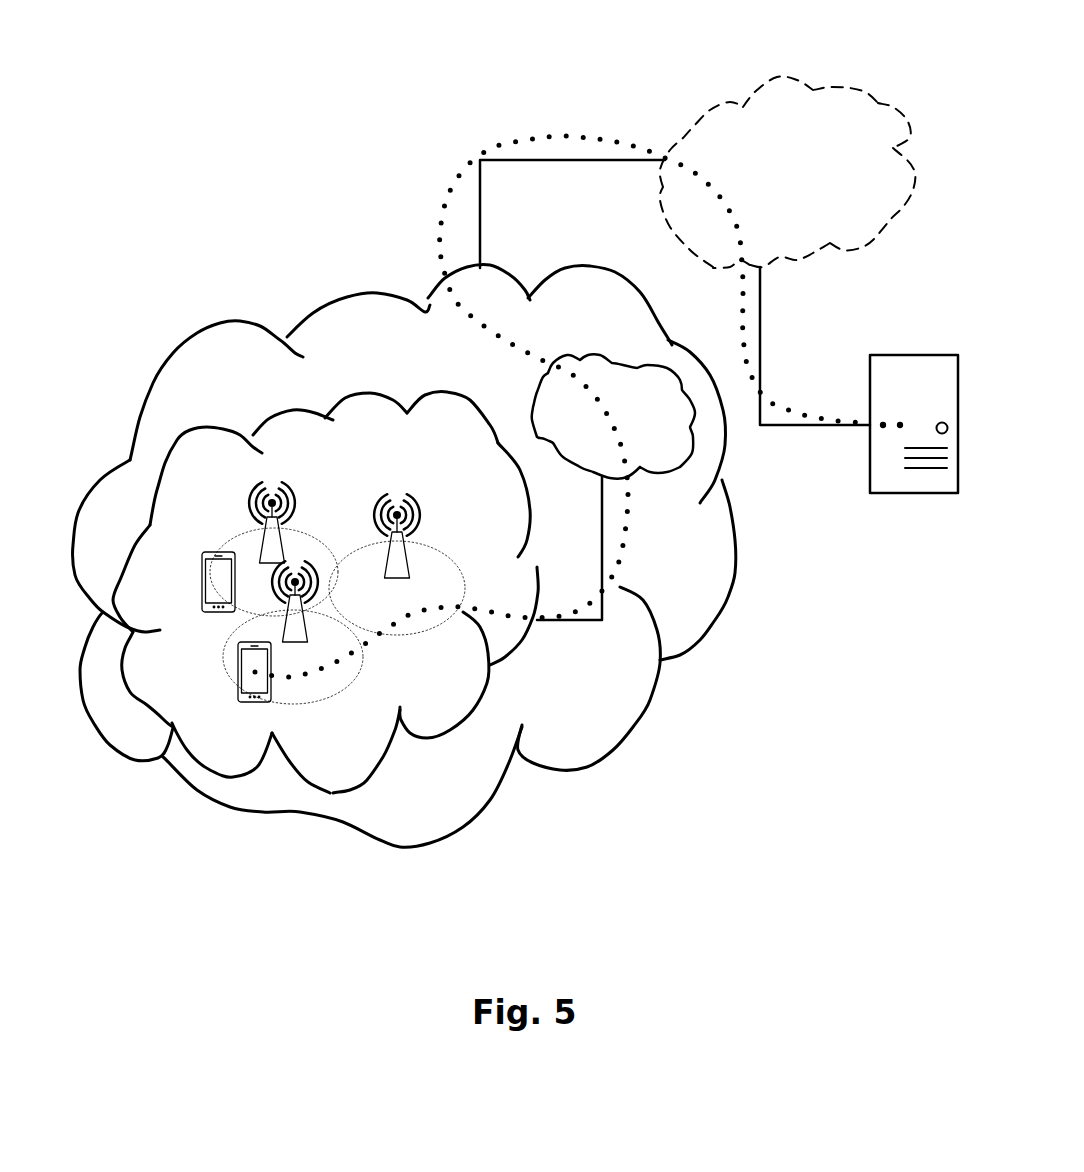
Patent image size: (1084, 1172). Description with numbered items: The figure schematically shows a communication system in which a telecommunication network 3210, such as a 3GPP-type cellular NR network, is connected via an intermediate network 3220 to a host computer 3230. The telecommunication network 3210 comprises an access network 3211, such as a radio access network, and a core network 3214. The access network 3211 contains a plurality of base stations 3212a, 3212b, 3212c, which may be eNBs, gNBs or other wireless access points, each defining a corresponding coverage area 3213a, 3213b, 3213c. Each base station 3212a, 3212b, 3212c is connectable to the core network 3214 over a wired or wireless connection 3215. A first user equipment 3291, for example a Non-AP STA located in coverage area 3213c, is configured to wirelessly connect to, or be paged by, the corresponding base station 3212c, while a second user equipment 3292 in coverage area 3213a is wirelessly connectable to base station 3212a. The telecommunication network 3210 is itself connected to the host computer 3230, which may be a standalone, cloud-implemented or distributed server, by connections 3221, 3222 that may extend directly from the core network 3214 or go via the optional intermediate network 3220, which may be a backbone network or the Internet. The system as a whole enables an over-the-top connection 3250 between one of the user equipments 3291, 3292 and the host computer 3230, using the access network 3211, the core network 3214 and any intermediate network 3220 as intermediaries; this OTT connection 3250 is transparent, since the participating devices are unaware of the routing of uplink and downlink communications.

The telecommunication network 3210 is at (432, 343).
The access network 3211 is at (387, 460).
The base station 3212a is at (300, 637).
The base station 3212b is at (413, 515).
The base station 3212c is at (243, 507).
The coverage area 3213a is at (365, 657).
The coverage area 3213b is at (463, 590).
The coverage area 3213c is at (225, 553).
The core network 3214 is at (690, 430).
The connection 3215 is at (603, 527).
The intermediate network 3220 is at (817, 186).
The connection 3221 is at (570, 160).
The connection 3222 is at (817, 430).
The host computer 3230 is at (893, 477).
The OTT connection 3250 is at (453, 187).
The first user equipment 3291 is at (203, 605).
The second user equipment 3292 is at (237, 697).